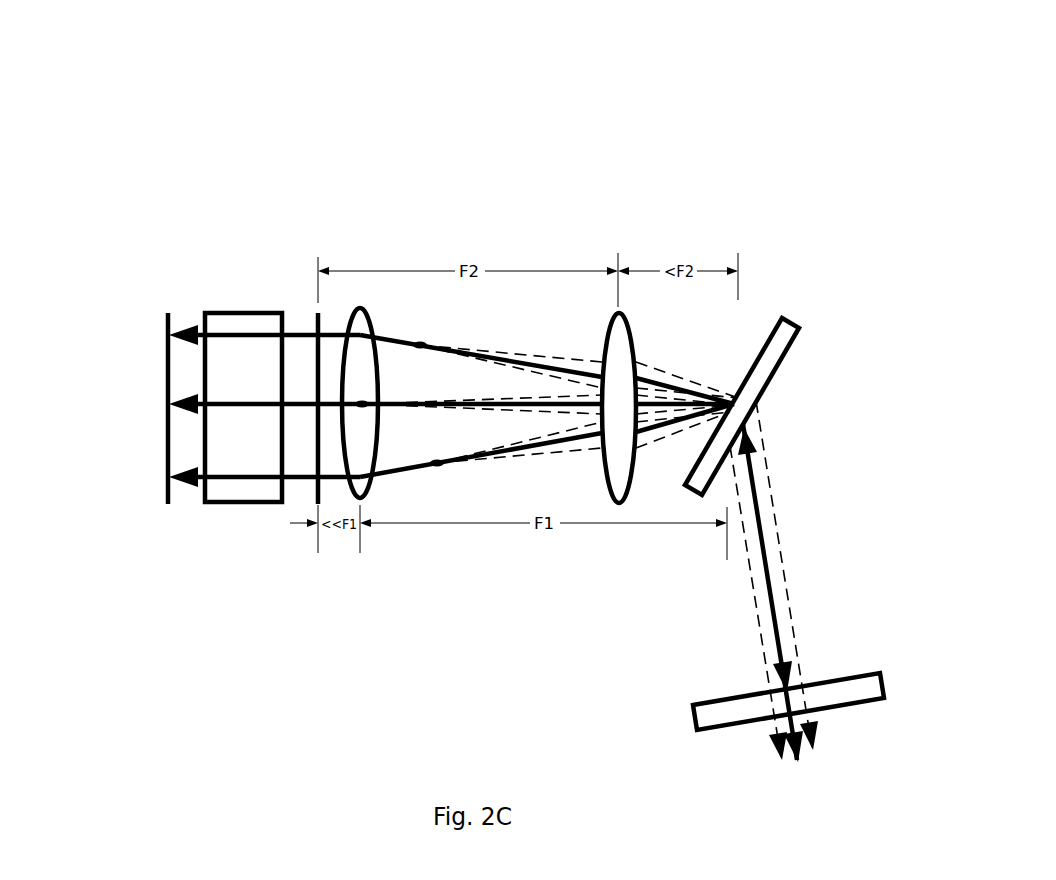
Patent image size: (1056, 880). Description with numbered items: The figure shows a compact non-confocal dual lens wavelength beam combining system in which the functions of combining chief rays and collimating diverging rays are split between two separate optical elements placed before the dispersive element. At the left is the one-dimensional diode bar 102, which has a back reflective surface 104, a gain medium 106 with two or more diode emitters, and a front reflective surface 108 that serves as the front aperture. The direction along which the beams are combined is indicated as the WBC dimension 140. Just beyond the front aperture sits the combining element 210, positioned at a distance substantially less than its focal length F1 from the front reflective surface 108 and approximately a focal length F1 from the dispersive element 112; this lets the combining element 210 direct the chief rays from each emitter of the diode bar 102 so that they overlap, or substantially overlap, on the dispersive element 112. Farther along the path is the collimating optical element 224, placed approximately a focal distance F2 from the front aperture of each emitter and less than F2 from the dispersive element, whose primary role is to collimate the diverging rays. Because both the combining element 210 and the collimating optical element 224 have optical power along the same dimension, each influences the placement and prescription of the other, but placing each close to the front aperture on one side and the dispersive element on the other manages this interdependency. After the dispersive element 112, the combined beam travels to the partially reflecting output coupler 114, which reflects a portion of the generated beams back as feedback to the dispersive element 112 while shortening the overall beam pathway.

The diode bar 102 is at (326, 167).
The back reflective surface 104 is at (168, 308).
The gain medium 106 is at (228, 310).
The front reflective surface 108 is at (318, 310).
The WBC dimension 140 is at (94, 406).
The combining element 210 is at (362, 500).
The collimating optical element 224 is at (608, 307).
The dispersive element 112 is at (782, 318).
The partially reflecting output coupler 114 is at (898, 681).